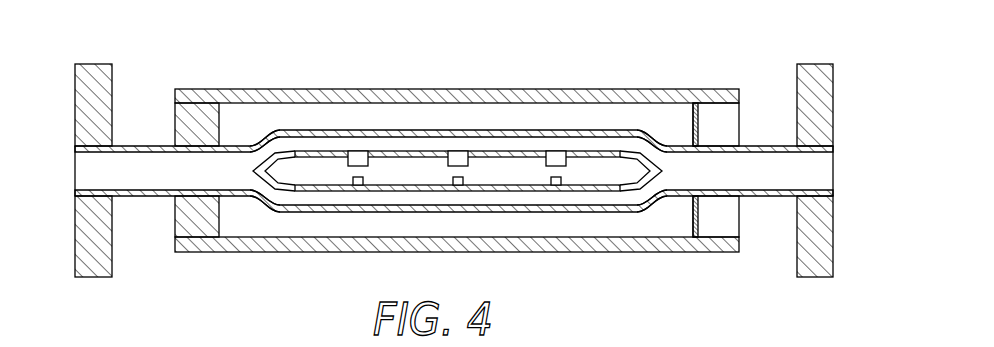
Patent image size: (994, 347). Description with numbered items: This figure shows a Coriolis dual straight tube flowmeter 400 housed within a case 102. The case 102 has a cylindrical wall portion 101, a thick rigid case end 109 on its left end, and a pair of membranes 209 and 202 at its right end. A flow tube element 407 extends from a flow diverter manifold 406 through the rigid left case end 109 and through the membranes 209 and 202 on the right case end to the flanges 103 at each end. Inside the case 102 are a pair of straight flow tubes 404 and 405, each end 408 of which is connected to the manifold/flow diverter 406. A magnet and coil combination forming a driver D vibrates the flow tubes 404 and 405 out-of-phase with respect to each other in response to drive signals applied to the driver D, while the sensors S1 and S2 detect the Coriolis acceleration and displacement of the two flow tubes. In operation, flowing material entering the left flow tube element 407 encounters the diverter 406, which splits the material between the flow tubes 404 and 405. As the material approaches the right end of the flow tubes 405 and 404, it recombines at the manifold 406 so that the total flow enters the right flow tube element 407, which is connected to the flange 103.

The cylindrical wall portion 101 is at (320, 253).
The case 102 is at (393, 87).
The flange 103 is at (86, 64).
The rigid case end 109 is at (176, 213).
The membrane 202 is at (738, 222).
The membrane 209 is at (693, 214).
The dual straight tube flowmeter 400 is at (752, 307).
The flow tube 404 is at (408, 143).
The flow tube 405 is at (498, 200).
The flow diverter manifold 406 is at (228, 181).
The flow tube element 407 is at (140, 197).
The end of flow tubes 408 is at (262, 132).
The sensor S1 is at (358, 152).
The driver D is at (460, 158).
The sensor S2 is at (558, 156).